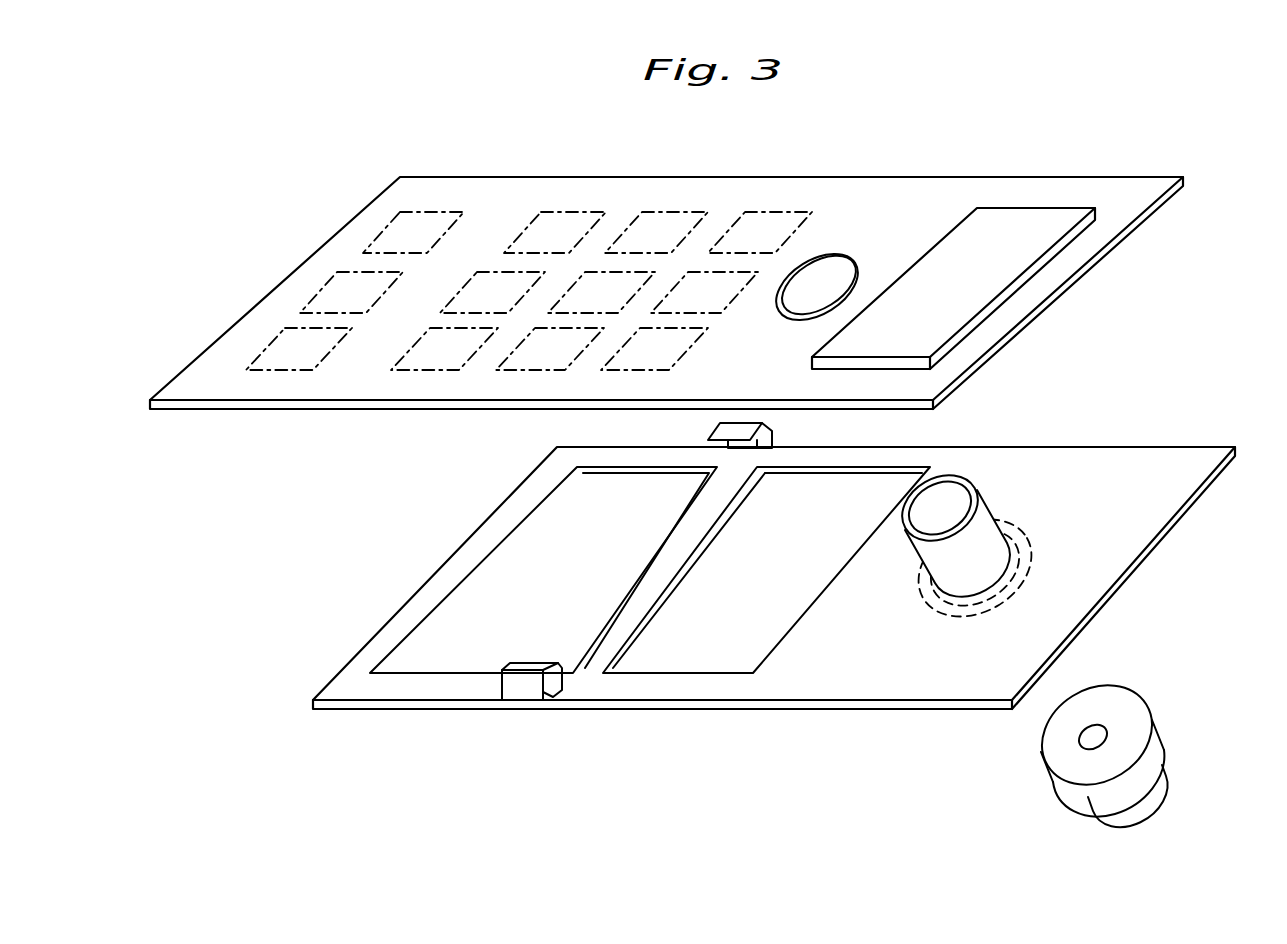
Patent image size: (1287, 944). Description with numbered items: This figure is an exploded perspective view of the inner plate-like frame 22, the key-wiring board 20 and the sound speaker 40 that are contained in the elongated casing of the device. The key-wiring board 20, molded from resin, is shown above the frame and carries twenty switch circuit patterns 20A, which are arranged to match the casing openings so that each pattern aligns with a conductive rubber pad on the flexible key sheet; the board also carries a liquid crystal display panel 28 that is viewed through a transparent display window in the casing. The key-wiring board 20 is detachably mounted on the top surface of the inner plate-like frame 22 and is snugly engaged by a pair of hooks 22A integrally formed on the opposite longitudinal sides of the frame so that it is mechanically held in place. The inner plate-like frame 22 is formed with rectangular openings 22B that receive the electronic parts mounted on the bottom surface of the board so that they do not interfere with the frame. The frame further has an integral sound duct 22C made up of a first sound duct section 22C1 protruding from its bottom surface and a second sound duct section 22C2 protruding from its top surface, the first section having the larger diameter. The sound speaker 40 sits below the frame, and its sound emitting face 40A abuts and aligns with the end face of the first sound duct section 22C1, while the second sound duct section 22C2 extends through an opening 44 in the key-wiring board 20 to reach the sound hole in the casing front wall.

The key-wiring board 20 is at (728, 177).
The switch circuit patterns 20A is at (413, 212).
The liquid crystal display (LCD) panel 28 is at (1023, 216).
The opening 44 is at (812, 270).
The inner plate-like frame 22 is at (668, 716).
The hooks 22A is at (778, 433).
The rectangular openings 22B is at (455, 583).
The sound duct 22C is at (986, 549).
The first sound duct section 22C1 is at (990, 508).
The second sound duct section 22C2 is at (1033, 565).
The sound speaker 40 is at (1143, 726).
The sound emitting face 40A is at (1108, 708).